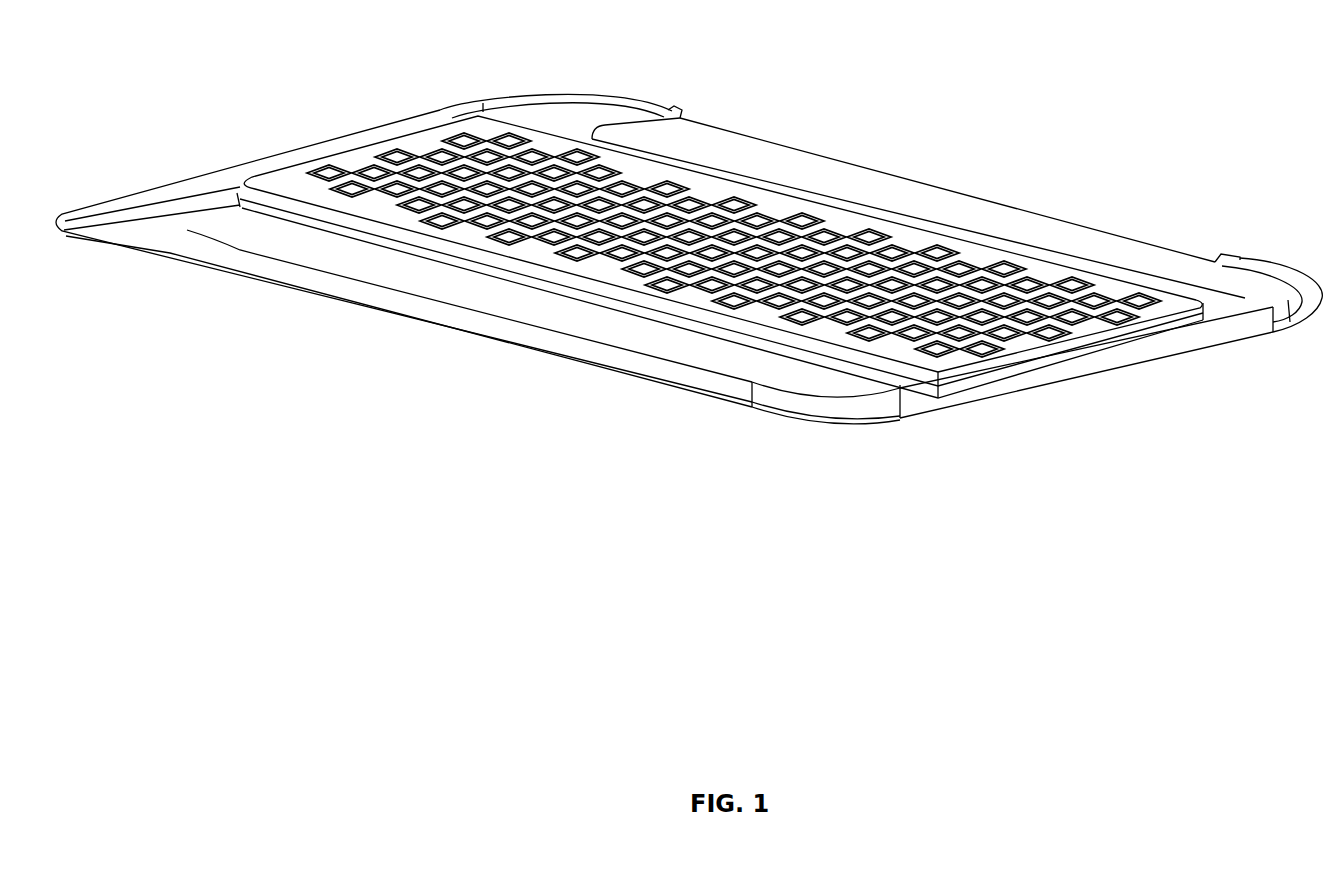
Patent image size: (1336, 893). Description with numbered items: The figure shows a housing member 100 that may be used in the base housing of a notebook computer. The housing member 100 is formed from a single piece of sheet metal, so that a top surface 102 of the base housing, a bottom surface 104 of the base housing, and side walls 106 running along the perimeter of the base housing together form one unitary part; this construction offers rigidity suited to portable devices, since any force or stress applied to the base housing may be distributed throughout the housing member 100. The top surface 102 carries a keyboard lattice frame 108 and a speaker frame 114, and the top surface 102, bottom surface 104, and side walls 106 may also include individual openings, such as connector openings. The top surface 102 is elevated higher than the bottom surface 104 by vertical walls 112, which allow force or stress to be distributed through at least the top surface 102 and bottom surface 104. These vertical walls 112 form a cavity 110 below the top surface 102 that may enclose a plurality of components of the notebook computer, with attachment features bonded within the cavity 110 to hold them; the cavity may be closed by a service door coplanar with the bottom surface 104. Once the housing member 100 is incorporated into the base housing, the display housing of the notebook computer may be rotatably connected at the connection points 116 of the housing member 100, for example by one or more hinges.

The housing member 100 is at (1076, 77).
The top surface 102 is at (556, 100).
The bottom surface 104 is at (878, 437).
The side walls 106 is at (1225, 340).
The keyboard lattice frame 108 is at (258, 166).
The cavity 110 is at (340, 240).
The vertical walls 112 is at (213, 188).
The speaker frame 114 is at (810, 168).
The connection points 116 is at (680, 118).